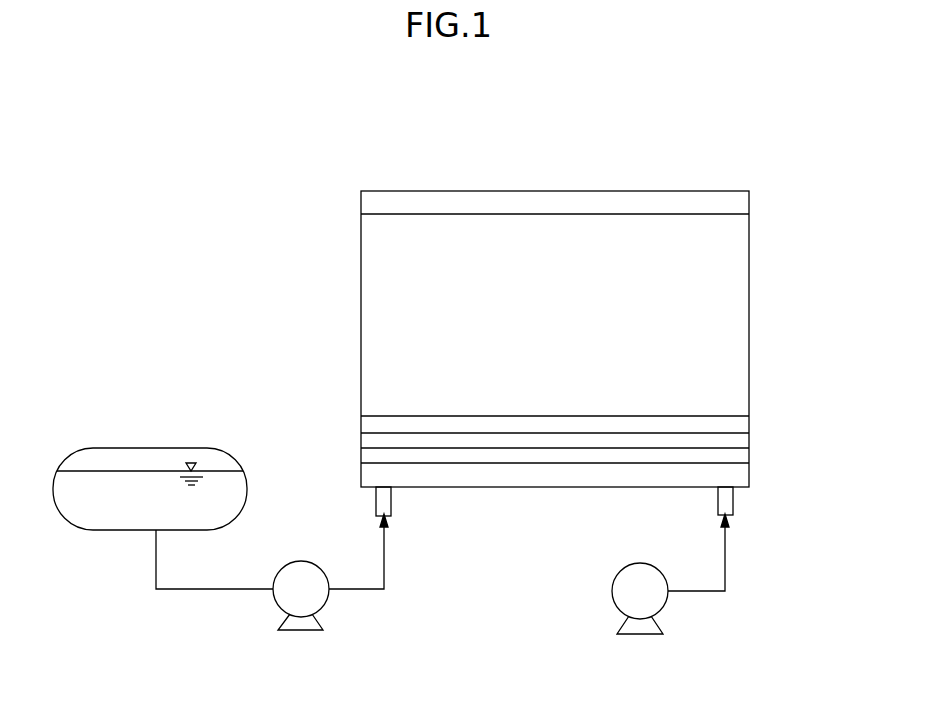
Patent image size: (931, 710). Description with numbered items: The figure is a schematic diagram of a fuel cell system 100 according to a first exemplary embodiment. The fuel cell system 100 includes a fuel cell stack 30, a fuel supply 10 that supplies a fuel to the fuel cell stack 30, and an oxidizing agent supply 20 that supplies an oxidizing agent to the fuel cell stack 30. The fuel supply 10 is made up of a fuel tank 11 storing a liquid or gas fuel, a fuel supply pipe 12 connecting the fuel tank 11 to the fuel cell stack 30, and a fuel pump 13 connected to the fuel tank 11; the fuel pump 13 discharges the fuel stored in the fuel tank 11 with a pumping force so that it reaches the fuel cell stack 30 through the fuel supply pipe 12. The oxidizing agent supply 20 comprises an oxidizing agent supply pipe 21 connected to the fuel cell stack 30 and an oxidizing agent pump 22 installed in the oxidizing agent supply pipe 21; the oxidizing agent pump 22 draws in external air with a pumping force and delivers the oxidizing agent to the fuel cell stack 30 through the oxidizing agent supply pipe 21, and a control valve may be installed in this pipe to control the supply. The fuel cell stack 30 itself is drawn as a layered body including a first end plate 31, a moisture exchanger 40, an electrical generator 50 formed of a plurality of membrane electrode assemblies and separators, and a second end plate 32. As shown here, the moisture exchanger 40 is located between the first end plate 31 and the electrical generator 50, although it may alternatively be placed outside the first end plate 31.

The fuel cell system 100 is at (477, 114).
The fuel supply 10 is at (150, 435).
The fuel tank 11 is at (106, 448).
The fuel supply pipe 12 is at (183, 591).
The fuel pump 13 is at (305, 632).
The oxidizing agent supply 20 is at (625, 604).
The oxidizing agent supply pipe 21 is at (710, 593).
The oxidizing agent pump 22 is at (645, 637).
The fuel cell stack 30 is at (597, 353).
The first end plate 31 is at (742, 473).
The second end plate 32 is at (743, 203).
The moisture exchanger 40 is at (756, 416).
The electrical generator 50 is at (742, 353).